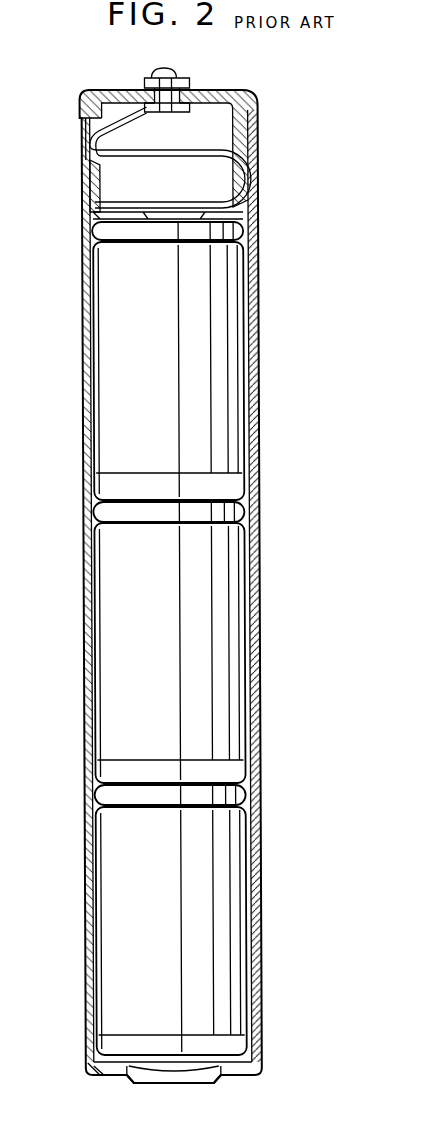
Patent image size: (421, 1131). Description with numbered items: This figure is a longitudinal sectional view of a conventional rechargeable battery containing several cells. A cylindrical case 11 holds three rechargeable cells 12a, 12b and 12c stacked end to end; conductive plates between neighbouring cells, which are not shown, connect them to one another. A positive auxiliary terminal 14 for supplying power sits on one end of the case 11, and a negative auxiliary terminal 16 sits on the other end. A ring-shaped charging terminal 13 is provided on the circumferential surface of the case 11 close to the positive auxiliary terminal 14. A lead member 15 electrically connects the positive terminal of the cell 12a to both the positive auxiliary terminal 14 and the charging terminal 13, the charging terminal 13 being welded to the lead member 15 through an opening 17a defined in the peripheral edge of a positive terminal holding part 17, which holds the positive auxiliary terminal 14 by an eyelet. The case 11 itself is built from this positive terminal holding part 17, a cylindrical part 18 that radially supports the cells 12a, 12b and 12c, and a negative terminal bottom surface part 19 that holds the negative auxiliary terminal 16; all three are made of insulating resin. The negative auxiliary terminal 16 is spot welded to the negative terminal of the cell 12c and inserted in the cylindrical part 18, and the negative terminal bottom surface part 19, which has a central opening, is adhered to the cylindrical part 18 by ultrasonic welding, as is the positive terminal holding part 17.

The cylindrical case 11 is at (258, 573).
The rechargeable cell 12a is at (220, 360).
The rechargeable cell 12b is at (250, 720).
The rechargeable cell 12c is at (230, 926).
The charging terminal 13 is at (258, 132).
The positive auxiliary terminal 14 is at (181, 70).
The lead member 15 is at (203, 150).
The negative auxiliary terminal 16 is at (168, 1077).
The positive terminal holding part 17 is at (84, 105).
The opening 17a is at (88, 150).
The cylindrical part 18 is at (250, 230).
The negative terminal bottom surface part 19 is at (82, 1073).